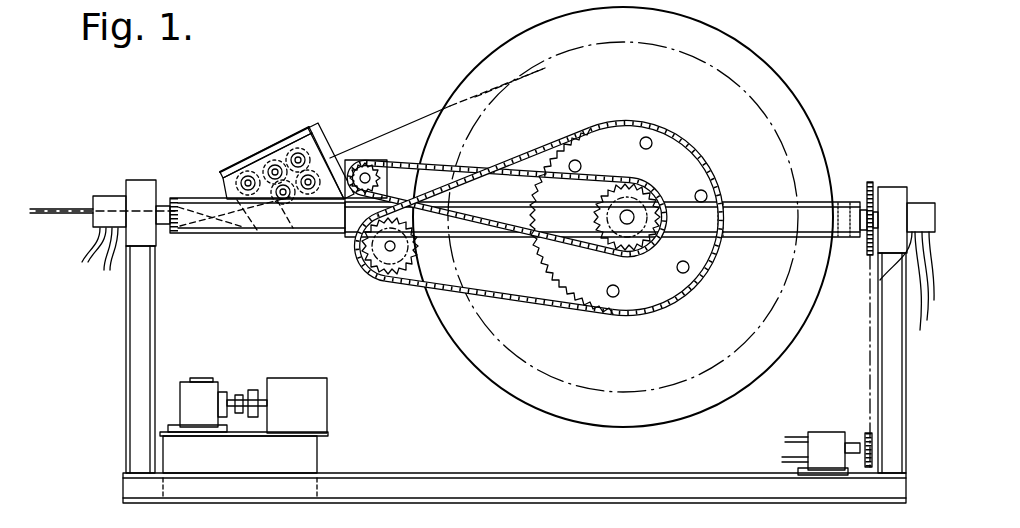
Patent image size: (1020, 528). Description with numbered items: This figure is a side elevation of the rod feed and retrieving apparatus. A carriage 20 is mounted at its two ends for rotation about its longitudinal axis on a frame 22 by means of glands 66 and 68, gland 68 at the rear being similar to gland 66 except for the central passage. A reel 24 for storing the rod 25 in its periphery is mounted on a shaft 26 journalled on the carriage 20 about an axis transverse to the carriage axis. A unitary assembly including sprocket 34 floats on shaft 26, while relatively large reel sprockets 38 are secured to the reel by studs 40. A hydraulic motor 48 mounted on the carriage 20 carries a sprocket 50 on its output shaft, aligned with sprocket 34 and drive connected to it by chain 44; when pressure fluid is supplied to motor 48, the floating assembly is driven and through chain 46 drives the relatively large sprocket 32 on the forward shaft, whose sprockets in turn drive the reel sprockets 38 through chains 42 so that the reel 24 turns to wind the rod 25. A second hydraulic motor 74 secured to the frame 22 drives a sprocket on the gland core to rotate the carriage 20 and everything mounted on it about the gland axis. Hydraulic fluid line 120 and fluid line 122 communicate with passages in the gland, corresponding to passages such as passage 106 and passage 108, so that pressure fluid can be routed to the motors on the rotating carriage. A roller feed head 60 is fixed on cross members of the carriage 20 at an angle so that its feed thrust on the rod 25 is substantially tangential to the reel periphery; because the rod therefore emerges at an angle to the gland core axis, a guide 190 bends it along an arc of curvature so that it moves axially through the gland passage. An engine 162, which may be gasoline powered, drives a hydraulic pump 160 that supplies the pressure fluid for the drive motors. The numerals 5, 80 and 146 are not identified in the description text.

The section line 5 is at (252, 150).
The carriage 20 is at (815, 208).
The frame 22 is at (136, 347).
The reel 24 is at (755, 40).
The rod 25 is at (76, 204).
The shaft 26 is at (634, 214).
The large sprocket 32 is at (380, 268).
The sprocket 34 is at (627, 248).
The reel sprocket 38 is at (700, 258).
The studs 40 is at (662, 128).
The chains 42 is at (528, 152).
The chain 44 is at (470, 168).
The chain 46 is at (490, 286).
The hydraulic motor 48 is at (356, 158).
The sprocket 50 is at (402, 172).
The roller feed head 60 is at (240, 166).
The gland 66 is at (142, 180).
The gland 68 is at (893, 192).
The second hydraulic motor 74 is at (825, 432).
The belt 80 is at (869, 348).
The passage 106 is at (85, 244).
The passage 108 is at (88, 268).
The hydraulic fluid line 120 is at (876, 306).
The fluid line 122 is at (915, 293).
The guide rail 146 is at (316, 128).
The hydraulic pump 160 is at (228, 360).
The motor or engine 162 is at (285, 382).
The guide 190 is at (197, 232).